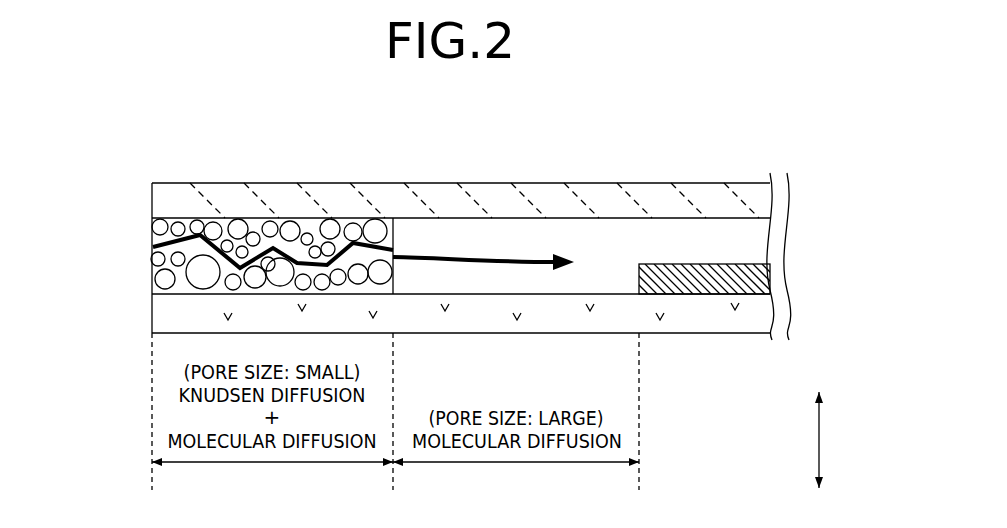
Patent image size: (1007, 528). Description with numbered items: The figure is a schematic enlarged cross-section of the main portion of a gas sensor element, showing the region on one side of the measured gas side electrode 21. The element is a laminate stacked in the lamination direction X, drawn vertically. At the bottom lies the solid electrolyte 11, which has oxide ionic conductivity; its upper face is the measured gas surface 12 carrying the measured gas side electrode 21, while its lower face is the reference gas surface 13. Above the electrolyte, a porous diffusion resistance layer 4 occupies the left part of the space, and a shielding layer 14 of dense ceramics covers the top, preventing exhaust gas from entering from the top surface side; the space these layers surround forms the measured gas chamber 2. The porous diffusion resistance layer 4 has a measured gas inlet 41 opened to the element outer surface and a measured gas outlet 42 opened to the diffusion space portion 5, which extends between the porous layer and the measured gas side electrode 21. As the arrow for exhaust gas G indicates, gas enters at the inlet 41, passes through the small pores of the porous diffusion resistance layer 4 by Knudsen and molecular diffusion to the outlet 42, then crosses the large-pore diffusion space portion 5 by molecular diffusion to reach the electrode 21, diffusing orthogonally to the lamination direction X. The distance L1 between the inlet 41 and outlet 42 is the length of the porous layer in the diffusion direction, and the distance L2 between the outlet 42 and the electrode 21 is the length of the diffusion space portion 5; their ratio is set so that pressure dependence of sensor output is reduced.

The measured gas chamber 2 is at (713, 232).
The porous diffusion resistance layer 4 is at (249, 195).
The measured gas inlet 41 is at (160, 244).
The measured gas outlet 42 is at (395, 245).
The diffusion space portion 5 is at (573, 245).
The solid electrolyte 11 is at (165, 308).
The measured gas surface 12 is at (493, 284).
The reference gas surface 13 is at (612, 333).
The shielding layer 14 is at (285, 207).
The measured gas side electrode 21 is at (703, 280).
The exhaust gas G is at (488, 256).
The distance between the inlet and the outlet L1 is at (272, 479).
The distance between the outlet and the measured gas side electrode L2 is at (516, 479).
The lamination direction X is at (832, 440).